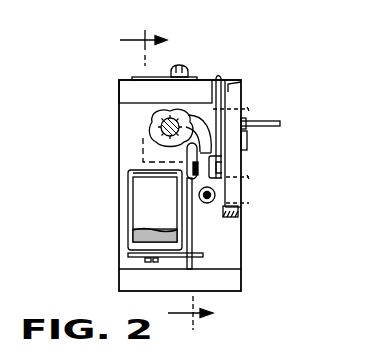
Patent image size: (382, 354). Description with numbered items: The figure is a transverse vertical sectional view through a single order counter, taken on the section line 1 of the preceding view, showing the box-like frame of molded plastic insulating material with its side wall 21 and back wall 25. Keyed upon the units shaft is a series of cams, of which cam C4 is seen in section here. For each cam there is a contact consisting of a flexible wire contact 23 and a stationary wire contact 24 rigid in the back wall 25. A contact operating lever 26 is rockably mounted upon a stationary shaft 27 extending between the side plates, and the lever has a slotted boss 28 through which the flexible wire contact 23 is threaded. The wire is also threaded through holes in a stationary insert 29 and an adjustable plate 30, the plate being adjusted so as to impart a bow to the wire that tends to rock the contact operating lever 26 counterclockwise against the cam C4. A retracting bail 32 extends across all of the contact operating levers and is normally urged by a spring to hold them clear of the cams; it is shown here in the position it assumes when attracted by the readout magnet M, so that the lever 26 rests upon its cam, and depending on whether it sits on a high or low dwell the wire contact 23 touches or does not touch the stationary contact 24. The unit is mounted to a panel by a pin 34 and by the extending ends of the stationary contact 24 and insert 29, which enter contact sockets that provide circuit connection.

The cam 1 is at (166, 177).
The side wall 21 is at (241, 228).
The flexible wire contact 23 is at (228, 94).
The stationary wire contact 24 is at (247, 180).
The back wall 25 is at (247, 193).
The contact operating lever 26 is at (196, 107).
The stationary shaft 27 is at (206, 204).
The slotted boss 28 is at (225, 156).
The stationary insert 29 is at (247, 108).
The adjustable plate 30 is at (221, 78).
The retracting bail 32 is at (193, 248).
The pin 34 is at (265, 123).
The cam C4 is at (156, 118).
The readout magnet M is at (137, 223).